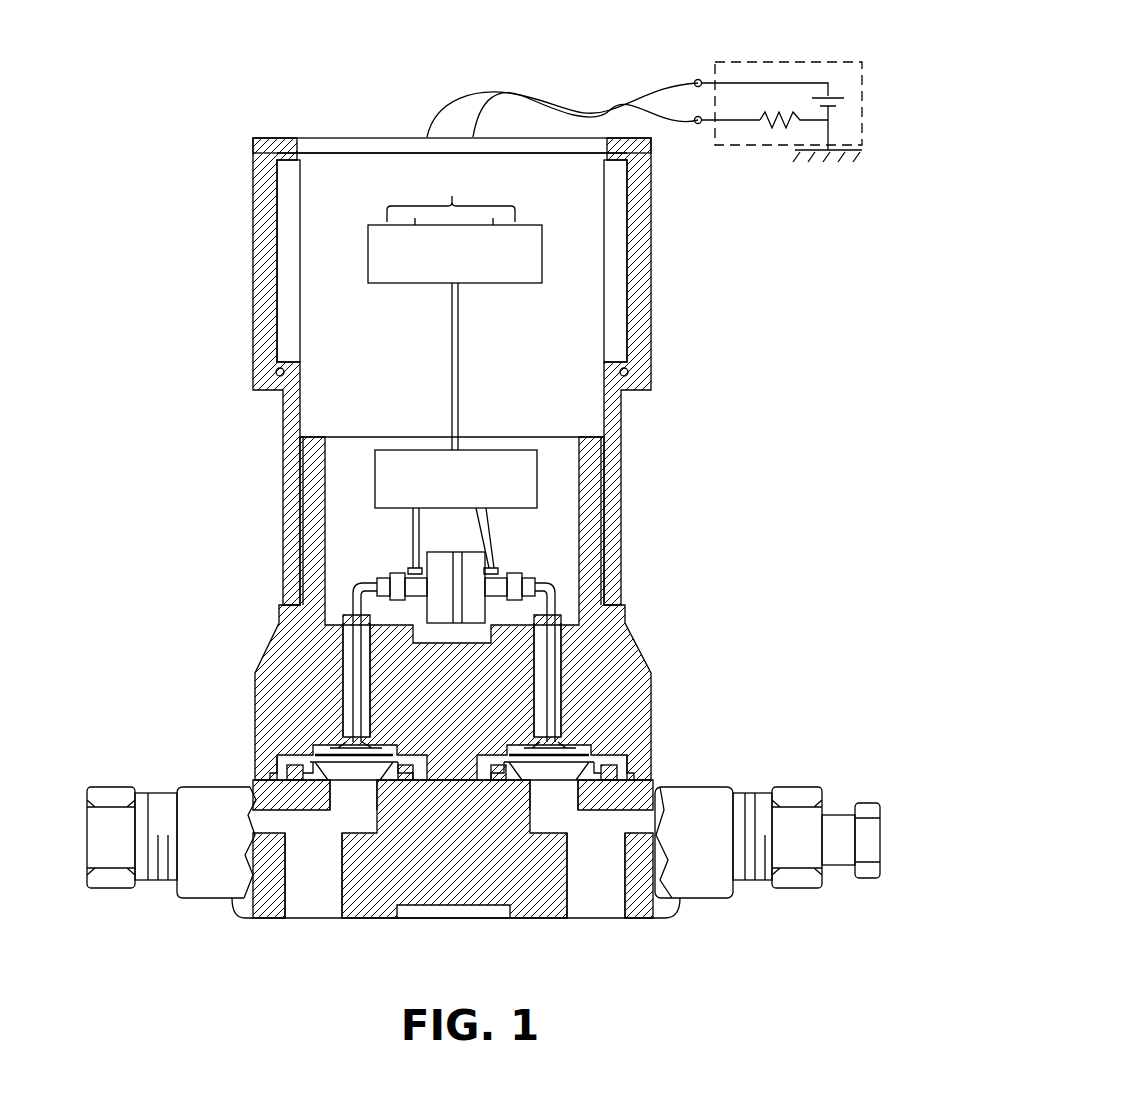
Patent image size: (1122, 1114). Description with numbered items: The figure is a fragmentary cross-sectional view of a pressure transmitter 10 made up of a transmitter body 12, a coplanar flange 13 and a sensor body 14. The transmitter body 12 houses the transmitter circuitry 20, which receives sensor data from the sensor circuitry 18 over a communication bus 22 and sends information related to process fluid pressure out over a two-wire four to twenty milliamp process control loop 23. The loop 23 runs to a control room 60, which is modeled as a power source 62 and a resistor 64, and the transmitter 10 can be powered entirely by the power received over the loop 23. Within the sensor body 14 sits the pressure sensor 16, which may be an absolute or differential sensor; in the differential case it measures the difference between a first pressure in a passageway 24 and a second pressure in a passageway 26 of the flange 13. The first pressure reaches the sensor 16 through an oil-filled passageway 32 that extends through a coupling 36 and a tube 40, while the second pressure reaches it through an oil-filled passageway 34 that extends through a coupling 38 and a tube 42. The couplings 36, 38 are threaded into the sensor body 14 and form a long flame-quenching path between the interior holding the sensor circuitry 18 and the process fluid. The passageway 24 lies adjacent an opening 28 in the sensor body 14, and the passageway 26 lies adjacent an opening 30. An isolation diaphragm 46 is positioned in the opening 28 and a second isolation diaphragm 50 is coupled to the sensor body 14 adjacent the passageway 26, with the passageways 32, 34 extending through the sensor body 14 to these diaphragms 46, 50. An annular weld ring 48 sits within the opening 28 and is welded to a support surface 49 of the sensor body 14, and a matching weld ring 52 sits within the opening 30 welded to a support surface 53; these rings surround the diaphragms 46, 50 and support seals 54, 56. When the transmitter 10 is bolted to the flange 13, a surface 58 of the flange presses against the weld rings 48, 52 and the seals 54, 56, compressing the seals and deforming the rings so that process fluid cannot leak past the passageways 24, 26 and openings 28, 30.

The pressure transmitter 10 is at (697, 270).
The transmitter body 12 is at (653, 212).
The flange 13 is at (192, 877).
The sensor body 14 is at (628, 620).
The pressure sensor 16 is at (437, 565).
The sensor circuitry 18 is at (537, 462).
The transmitter circuitry 20 is at (542, 258).
The communication bus 22 is at (460, 335).
The process control loop 23 is at (542, 82).
The passageway 24 is at (313, 872).
The passageway 26 is at (596, 872).
The opening 28 is at (347, 770).
The opening 30 is at (557, 773).
The passageway 32 is at (352, 662).
The passageway 34 is at (560, 655).
The coupling 36 is at (340, 640).
The coupling 38 is at (570, 682).
The tube 40 is at (352, 605).
The tube 42 is at (552, 605).
The isolation diaphragm 46 is at (347, 740).
The weld ring 48 is at (290, 762).
The support surface 49 is at (328, 753).
The isolation diaphragm 50 is at (600, 692).
The weld ring 52 is at (630, 742).
The support surface 53 is at (632, 700).
The seal 54 is at (282, 770).
The seal 56 is at (622, 775).
The surface 58 is at (440, 782).
The control room 60 is at (738, 62).
The power source 62 is at (840, 95).
The resistor 64 is at (767, 125).